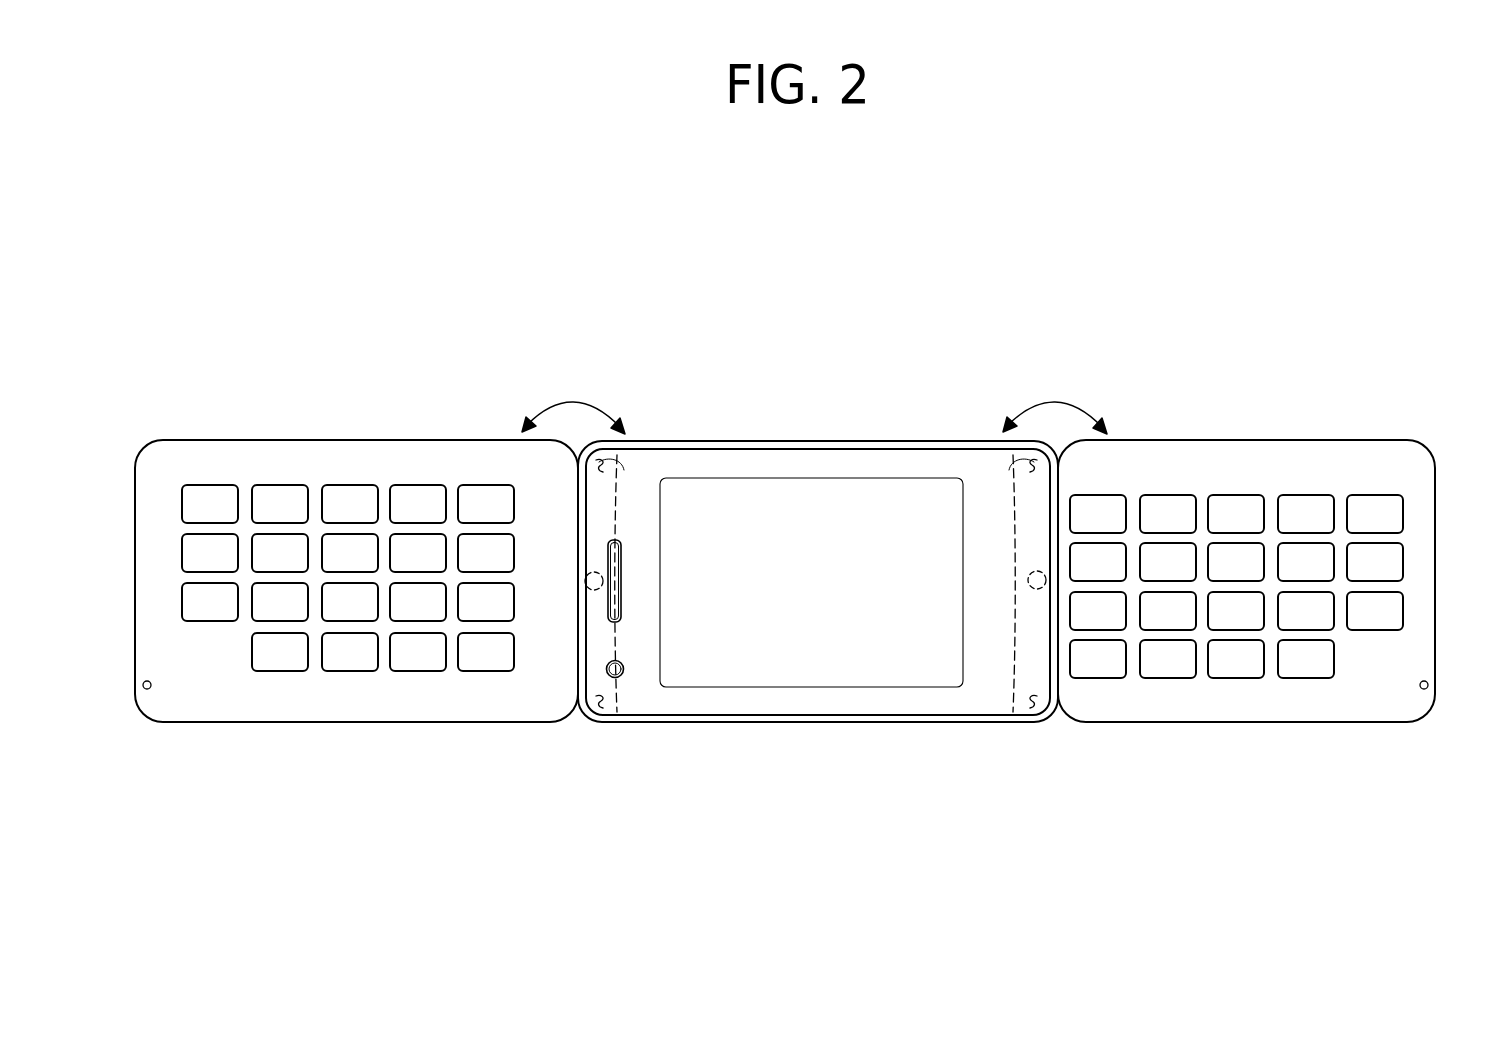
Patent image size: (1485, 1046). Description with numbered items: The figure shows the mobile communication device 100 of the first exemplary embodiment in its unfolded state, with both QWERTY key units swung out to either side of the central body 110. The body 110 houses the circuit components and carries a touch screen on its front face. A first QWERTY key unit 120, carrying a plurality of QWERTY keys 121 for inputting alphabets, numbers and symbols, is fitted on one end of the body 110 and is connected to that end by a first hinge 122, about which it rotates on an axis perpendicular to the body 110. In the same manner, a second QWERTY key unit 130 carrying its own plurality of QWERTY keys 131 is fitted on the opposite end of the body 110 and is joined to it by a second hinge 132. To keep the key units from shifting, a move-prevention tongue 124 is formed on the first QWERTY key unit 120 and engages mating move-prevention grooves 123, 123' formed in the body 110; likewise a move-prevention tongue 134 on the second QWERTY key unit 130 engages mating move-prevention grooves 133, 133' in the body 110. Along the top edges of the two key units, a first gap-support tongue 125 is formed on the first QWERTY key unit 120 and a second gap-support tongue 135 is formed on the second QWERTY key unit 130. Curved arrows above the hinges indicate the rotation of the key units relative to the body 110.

The mobile communication device 100 is at (974, 245).
The body 110 is at (717, 703).
The first QWERTY key unit 120 is at (1321, 703).
The QWERTY keys 121 is at (1302, 503).
The first hinge 122 is at (1040, 589).
The move-prevention groove 123 is at (1031, 776).
The move-prevention groove 123' is at (962, 433).
The move-prevention tongue 124 is at (1033, 463).
The first gap-support tongue 125 is at (1421, 689).
The second QWERTY key unit 130 is at (248, 702).
The QWERTY keys 131 is at (340, 505).
The second hinge 132 is at (592, 590).
The move-prevention groove 133 is at (606, 776).
The move-prevention groove 133' is at (674, 433).
The move-prevention tongue 134 is at (600, 463).
The second gap-support tongue 135 is at (144, 689).